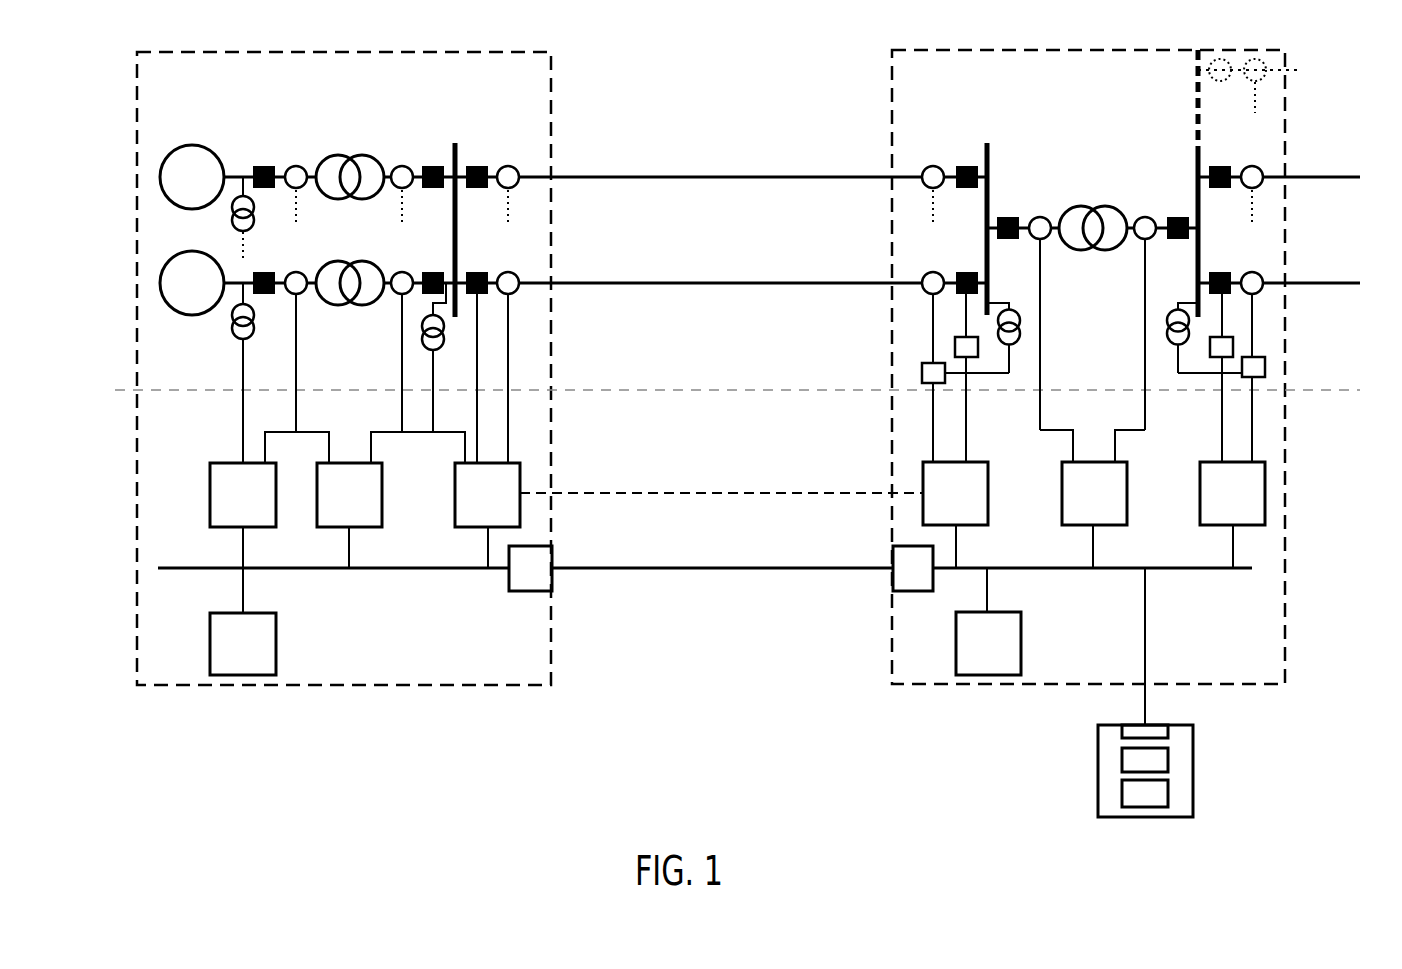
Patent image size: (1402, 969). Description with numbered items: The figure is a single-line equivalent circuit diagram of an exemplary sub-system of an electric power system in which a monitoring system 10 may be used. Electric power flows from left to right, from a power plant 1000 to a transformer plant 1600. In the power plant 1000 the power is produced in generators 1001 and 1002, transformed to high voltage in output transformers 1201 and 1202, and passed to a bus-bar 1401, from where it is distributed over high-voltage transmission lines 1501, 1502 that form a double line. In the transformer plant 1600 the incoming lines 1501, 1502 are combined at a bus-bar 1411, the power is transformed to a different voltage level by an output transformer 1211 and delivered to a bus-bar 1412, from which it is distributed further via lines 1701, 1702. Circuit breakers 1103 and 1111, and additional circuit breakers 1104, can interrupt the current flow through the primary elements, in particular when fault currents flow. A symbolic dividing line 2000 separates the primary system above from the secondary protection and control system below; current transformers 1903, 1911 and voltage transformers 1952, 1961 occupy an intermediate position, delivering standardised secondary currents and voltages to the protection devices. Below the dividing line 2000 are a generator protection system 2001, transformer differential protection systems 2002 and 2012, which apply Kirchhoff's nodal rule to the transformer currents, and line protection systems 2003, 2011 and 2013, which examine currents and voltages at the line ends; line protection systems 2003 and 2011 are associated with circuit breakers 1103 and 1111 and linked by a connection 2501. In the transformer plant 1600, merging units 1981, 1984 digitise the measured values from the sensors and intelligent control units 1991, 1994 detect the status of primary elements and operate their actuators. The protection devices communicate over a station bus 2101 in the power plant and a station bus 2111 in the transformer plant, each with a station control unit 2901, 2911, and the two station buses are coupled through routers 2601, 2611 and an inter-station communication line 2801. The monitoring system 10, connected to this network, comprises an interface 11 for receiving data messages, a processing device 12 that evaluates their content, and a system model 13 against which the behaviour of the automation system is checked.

The power plant 1000 is at (552, 93).
The transformer plant 1600 is at (892, 93).
The generator 1001 is at (195, 318).
The generator 1002 is at (195, 145).
The circuit breaker 1104 is at (263, 162).
The circuit breaker 1103 is at (483, 268).
The circuit breaker 1111 is at (963, 270).
The output transformer 1201 is at (338, 305).
The output transformer 1202 is at (360, 153).
The output transformer 1211 is at (1080, 250).
The bus-bar 1401 is at (458, 157).
The bus-bar 1411 is at (990, 155).
The bus-bar 1412 is at (1195, 185).
The high-voltage transmission line 1501 is at (690, 283).
The high-voltage transmission line 1502 is at (690, 177).
The line 1701 is at (1305, 283).
The line 1702 is at (1305, 177).
The current transformer 1903 is at (511, 297).
The current transformer 1911 is at (930, 297).
The voltage transformer 1952 is at (446, 328).
The voltage transformer 1961 is at (955, 347).
The merging unit 1981 is at (922, 373).
The intelligent control unit 1991 is at (978, 350).
The intelligent control unit 1994 is at (1233, 347).
The merging unit 1984 is at (1265, 367).
The dividing line 2000 is at (690, 390).
The generator protection system 2001 is at (210, 493).
The transformer differential protection system 2002 is at (382, 493).
The line protection system 2003 is at (520, 470).
The line protection system 2011 is at (923, 470).
The transformer differential protection system 2012 is at (1127, 493).
The line protection system 2013 is at (1265, 470).
The station bus 2101 is at (445, 571).
The station bus 2111 is at (1190, 571).
The communication link 2501 is at (690, 493).
The router 2601 is at (552, 588).
The router 2611 is at (903, 593).
The communication line 2801 is at (690, 571).
The station control unit 2901 is at (276, 642).
The station control unit 2911 is at (1021, 642).
The monitoring system 10 is at (1193, 797).
The interface 11 is at (1122, 732).
The processing device 12 is at (1168, 760).
The system model 13 is at (1122, 795).